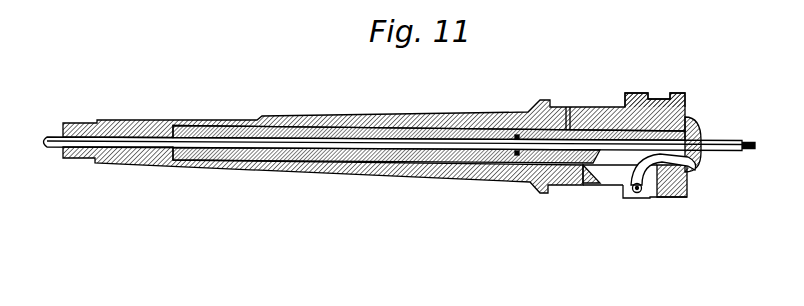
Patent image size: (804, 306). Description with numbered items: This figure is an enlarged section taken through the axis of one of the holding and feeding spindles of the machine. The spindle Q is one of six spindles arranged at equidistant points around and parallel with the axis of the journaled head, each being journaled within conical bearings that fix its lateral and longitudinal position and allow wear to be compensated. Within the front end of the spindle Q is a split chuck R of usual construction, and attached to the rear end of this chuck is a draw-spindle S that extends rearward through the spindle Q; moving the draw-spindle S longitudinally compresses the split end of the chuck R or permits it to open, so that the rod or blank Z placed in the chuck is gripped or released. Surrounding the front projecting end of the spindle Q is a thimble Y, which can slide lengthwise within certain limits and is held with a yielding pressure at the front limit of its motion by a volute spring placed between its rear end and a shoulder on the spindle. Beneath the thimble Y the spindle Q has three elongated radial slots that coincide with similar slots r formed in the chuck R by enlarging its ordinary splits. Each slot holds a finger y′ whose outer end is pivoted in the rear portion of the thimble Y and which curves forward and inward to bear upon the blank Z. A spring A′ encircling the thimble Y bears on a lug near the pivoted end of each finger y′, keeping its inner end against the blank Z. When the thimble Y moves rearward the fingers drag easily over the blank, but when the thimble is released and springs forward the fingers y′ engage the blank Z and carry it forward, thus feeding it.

The draw-spindle S is at (422, 116).
The spindle Q is at (375, 172).
The thimble Y is at (655, 88).
The split chuck R is at (703, 142).
The rod or blank Z is at (718, 162).
The rod tip z is at (755, 146).
The spring A′ is at (661, 197).
The finger y′ is at (640, 198).
The slot r is at (632, 162).